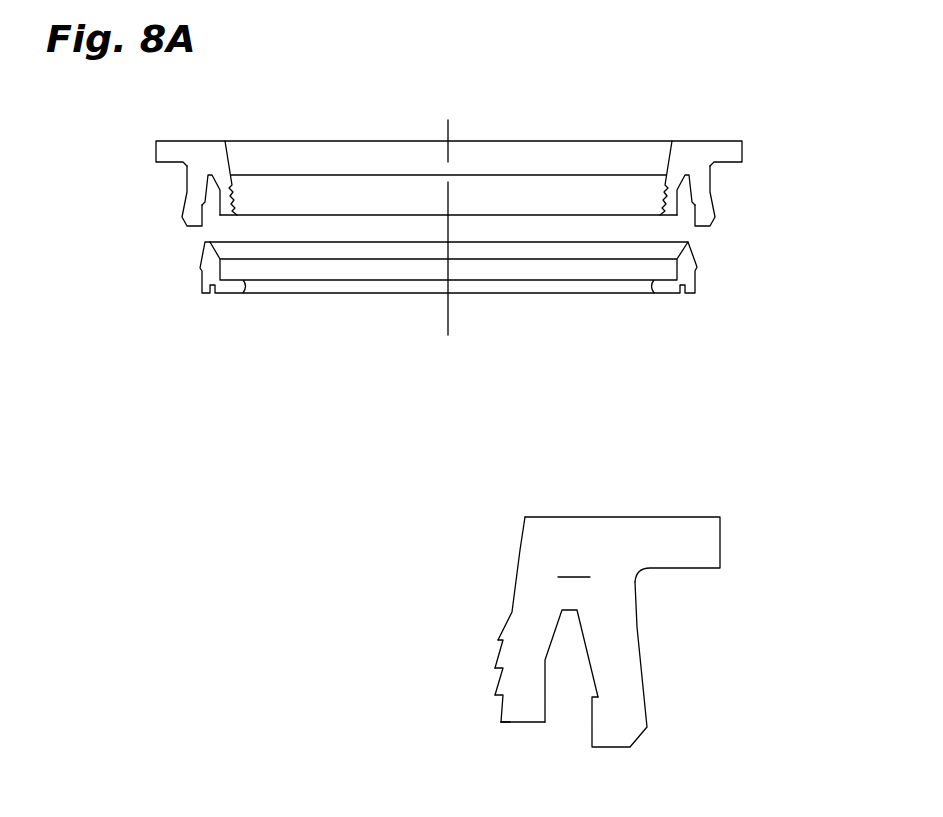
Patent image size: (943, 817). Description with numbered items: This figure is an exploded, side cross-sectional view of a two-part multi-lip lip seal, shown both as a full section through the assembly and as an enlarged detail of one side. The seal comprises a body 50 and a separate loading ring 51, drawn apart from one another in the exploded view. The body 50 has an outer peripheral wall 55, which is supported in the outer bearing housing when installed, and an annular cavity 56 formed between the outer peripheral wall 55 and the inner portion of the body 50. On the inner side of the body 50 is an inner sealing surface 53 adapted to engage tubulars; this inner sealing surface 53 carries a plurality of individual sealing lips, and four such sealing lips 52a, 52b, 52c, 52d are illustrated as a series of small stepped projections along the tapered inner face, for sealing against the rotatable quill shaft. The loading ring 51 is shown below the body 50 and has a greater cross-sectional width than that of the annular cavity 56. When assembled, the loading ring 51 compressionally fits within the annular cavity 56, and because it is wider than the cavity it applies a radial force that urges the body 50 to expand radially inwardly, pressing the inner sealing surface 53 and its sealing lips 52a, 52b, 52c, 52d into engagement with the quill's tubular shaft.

The body 50 is at (708, 165).
The loading ring 51 is at (713, 270).
The inner sealing surface 53 is at (663, 162).
The outer peripheral wall 55 is at (182, 193).
The annular cavity 56 is at (210, 202).
The sealing lip 52a is at (503, 640).
The sealing lip 52b is at (503, 668).
The sealing lip 52c is at (503, 695).
The sealing lip 52d is at (499, 722).